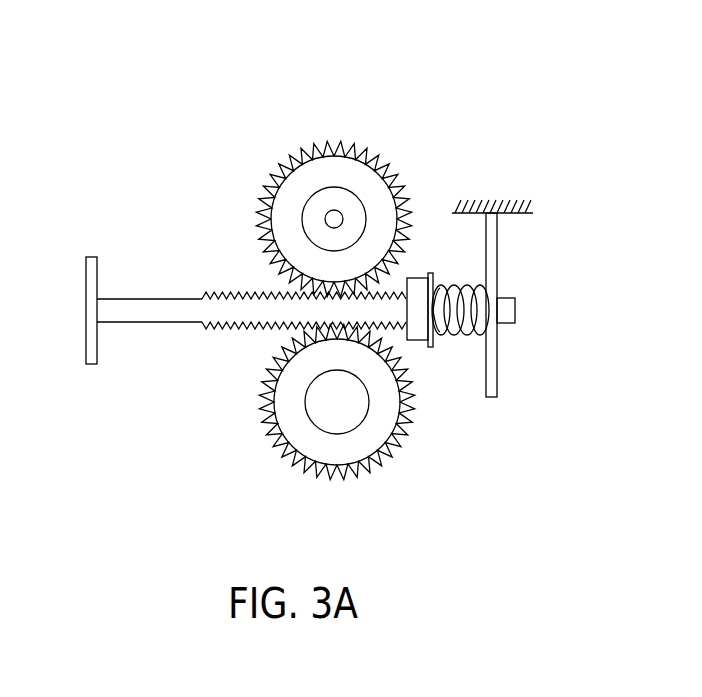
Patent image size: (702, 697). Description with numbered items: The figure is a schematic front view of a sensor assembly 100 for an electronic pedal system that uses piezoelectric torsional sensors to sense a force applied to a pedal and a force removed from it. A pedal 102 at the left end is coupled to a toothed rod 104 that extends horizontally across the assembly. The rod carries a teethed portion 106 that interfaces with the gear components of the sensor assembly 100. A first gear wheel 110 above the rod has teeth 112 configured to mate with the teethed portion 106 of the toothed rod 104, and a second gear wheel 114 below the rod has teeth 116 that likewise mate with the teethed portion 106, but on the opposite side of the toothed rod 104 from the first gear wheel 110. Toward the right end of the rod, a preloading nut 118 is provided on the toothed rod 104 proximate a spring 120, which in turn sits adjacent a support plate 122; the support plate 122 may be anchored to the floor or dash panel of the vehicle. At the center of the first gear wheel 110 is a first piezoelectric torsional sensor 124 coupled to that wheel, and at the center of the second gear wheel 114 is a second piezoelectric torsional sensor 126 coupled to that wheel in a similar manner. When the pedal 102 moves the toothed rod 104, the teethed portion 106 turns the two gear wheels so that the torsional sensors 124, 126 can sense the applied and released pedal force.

The sensor assembly 100 is at (490, 66).
The pedal 102 is at (86, 290).
The toothed rod 104 is at (143, 322).
The teethed portion 106 is at (245, 284).
The first gear wheel 110 is at (314, 192).
The teeth 112 is at (335, 147).
The second gear wheel 114 is at (345, 438).
The teeth 116 is at (278, 440).
The preloading nut 118 is at (420, 342).
The spring 120 is at (457, 281).
The support plate 122 is at (498, 370).
The first piezoelectric torsional sensor 124 is at (299, 210).
The second piezoelectric torsional sensor 126 is at (375, 421).